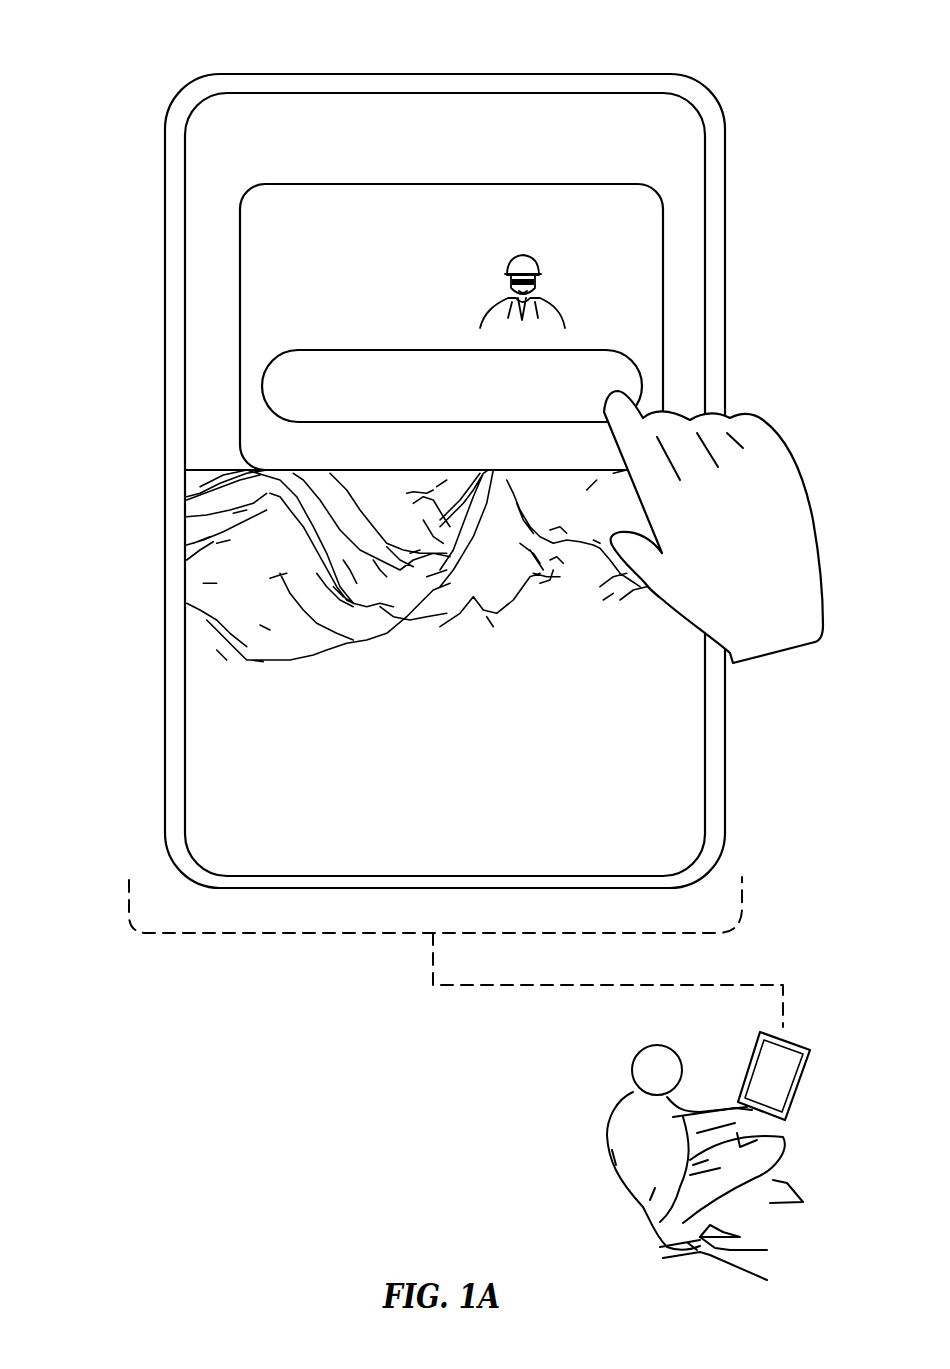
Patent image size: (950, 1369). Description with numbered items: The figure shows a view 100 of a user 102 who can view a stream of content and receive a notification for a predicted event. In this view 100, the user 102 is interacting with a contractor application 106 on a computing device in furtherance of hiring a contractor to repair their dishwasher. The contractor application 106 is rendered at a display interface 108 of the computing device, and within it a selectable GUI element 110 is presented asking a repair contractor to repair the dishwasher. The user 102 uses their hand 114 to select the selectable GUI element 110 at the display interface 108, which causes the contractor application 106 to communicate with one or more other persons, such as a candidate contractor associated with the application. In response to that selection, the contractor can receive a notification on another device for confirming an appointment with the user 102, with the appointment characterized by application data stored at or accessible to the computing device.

The view 100 is at (116, 84).
The user 102 is at (663, 1144).
The contractor application 106 is at (460, 242).
The display interface 108 is at (652, 129).
The selectable GUI element 110 is at (560, 423).
The hand 114 is at (770, 539).